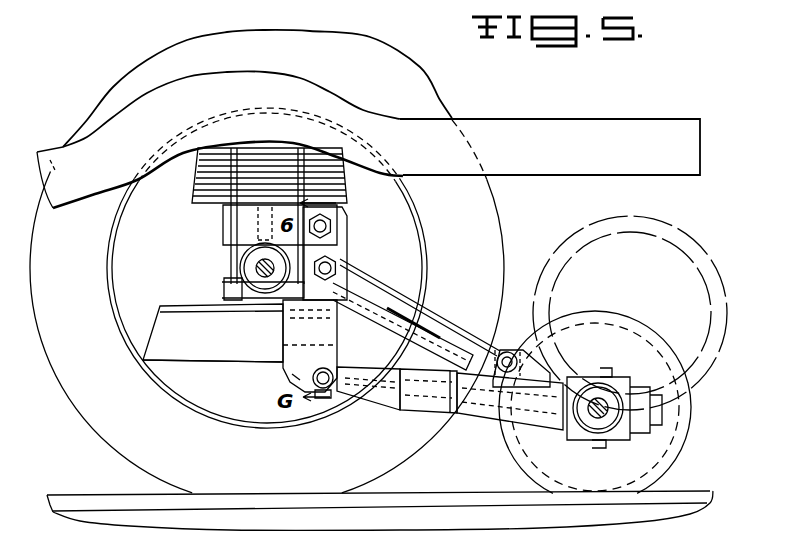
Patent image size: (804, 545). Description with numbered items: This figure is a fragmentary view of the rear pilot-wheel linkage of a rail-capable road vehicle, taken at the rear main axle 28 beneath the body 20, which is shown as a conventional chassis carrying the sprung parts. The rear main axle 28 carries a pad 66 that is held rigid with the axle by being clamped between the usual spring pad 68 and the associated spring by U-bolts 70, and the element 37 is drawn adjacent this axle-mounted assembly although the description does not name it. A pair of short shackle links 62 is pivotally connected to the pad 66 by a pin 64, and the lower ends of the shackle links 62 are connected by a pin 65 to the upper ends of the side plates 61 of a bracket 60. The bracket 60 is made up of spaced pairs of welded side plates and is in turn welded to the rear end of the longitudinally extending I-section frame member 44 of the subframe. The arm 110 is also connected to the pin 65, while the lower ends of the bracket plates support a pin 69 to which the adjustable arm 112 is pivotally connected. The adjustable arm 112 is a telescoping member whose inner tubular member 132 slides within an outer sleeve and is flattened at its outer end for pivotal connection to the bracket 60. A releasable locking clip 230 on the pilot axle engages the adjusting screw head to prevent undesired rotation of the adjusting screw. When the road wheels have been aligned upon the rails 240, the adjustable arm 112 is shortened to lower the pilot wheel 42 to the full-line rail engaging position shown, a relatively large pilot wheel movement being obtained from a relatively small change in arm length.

The body 20 is at (592, 128).
The engine cylinder 37 is at (266, 155).
The U-bolts 70 is at (233, 172).
The pad 66 is at (228, 203).
The spring pad 68 is at (240, 243).
The main axle 28 is at (240, 270).
The shackle links 62 is at (340, 240).
The pin 64 is at (330, 225).
The pin 65 is at (345, 262).
The bracket 60 is at (340, 320).
The arm 110 is at (433, 302).
The side plates 61 is at (295, 328).
The frame members 44 is at (173, 360).
The pin 69 is at (330, 367).
The inner tubular member 132 is at (360, 400).
The adjustable arm 112 is at (384, 408).
The clips 230 is at (653, 403).
The pilot wheels 42 is at (677, 236).
The rails 240 is at (677, 494).